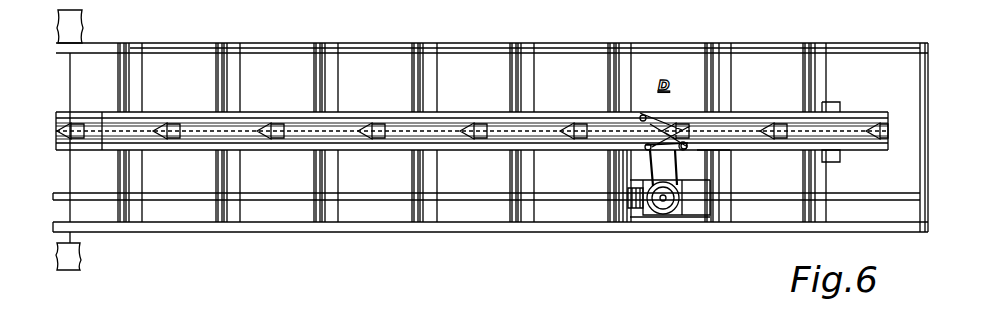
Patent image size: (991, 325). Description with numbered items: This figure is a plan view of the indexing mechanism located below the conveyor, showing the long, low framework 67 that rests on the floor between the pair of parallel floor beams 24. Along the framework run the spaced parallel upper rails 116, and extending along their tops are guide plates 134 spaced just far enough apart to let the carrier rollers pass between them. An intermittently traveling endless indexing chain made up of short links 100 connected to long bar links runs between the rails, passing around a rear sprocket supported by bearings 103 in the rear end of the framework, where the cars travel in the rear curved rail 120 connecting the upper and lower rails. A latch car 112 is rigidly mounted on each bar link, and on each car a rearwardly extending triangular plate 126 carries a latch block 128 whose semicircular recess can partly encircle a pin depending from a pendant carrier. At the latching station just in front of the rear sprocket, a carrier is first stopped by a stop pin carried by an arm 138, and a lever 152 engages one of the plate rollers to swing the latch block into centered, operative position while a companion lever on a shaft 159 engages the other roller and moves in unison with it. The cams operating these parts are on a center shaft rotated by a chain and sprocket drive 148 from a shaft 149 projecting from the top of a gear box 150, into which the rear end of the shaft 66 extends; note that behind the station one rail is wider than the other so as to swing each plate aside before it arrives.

The floor beams 24 is at (65, 268).
The shaft 66 is at (58, 198).
The framework 67 is at (293, 228).
The short links 100 is at (298, 128).
The bearings 103 is at (833, 101).
The latch car 112 is at (56, 131).
The upper rails 116 is at (60, 113).
The rear curved rail 120 is at (870, 143).
The triangular plate 126 is at (764, 120).
The latch block 128 is at (886, 129).
The guide plates 134 is at (470, 147).
The arm 138 is at (700, 148).
The chain and sprocket drive 148 is at (684, 150).
The shaft 149 is at (660, 210).
The gear box 150 is at (680, 163).
The lever 152 is at (650, 112).
The shaft 159 is at (628, 156).